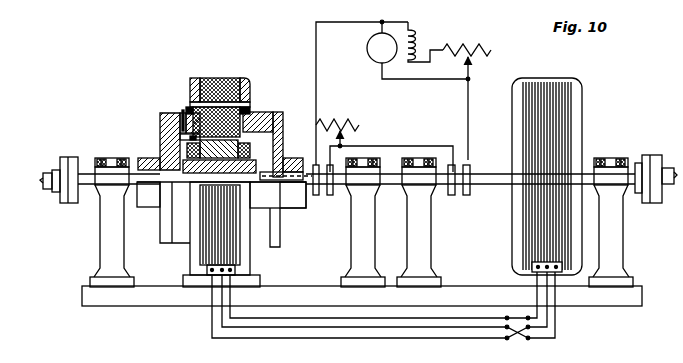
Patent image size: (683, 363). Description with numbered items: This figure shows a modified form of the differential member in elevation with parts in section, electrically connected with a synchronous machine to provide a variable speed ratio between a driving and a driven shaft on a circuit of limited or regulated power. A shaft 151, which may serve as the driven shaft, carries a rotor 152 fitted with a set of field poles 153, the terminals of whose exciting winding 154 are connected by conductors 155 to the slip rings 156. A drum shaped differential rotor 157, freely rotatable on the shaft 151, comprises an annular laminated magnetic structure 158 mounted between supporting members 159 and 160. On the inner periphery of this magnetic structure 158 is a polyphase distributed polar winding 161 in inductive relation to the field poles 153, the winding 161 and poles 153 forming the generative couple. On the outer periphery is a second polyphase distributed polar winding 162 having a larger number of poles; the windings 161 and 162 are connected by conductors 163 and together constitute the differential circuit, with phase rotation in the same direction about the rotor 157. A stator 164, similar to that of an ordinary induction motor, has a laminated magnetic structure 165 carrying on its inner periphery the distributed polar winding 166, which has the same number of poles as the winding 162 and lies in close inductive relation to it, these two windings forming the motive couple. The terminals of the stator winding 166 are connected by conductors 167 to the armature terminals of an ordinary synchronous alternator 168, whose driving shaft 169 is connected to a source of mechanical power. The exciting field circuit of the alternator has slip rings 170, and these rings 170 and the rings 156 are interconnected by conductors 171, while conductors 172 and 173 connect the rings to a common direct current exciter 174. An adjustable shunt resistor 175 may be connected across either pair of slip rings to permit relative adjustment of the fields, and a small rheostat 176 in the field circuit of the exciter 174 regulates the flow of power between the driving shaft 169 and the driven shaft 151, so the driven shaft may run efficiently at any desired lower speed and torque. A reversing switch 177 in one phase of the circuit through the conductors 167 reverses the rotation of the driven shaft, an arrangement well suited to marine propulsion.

The shaft 151 is at (45, 188).
The rotor 152 is at (263, 138).
The field poles 153 is at (188, 150).
The exciting winding 154 is at (186, 157).
The conductors 155 is at (263, 158).
The slip rings 156 is at (318, 195).
The differential rotor 157 is at (153, 112).
The annular laminated magnetic structure 158 is at (244, 118).
The supporting member 159 is at (165, 242).
The supporting member 160 is at (282, 237).
The polyphase distributed polar winding 161 is at (188, 140).
The second polyphase distributed polar winding 162 is at (187, 111).
The conductors 163 is at (180, 110).
The stator 164 is at (192, 79).
The laminated magnetic structure 165 is at (224, 83).
The distributed polar winding 166 is at (249, 97).
The conductors 167 is at (282, 318).
The synchronous alternator 168 is at (545, 82).
The driving shaft 169 is at (673, 168).
The slip rings 170 is at (452, 195).
The conductors 171 is at (395, 138).
The conductor 172 is at (316, 72).
The conductor 173 is at (468, 120).
The direct current exciter 174 is at (367, 50).
The adjustable shunt resistor 175 is at (340, 122).
The rheostat 176 is at (462, 47).
The reversing switch 177 is at (519, 342).